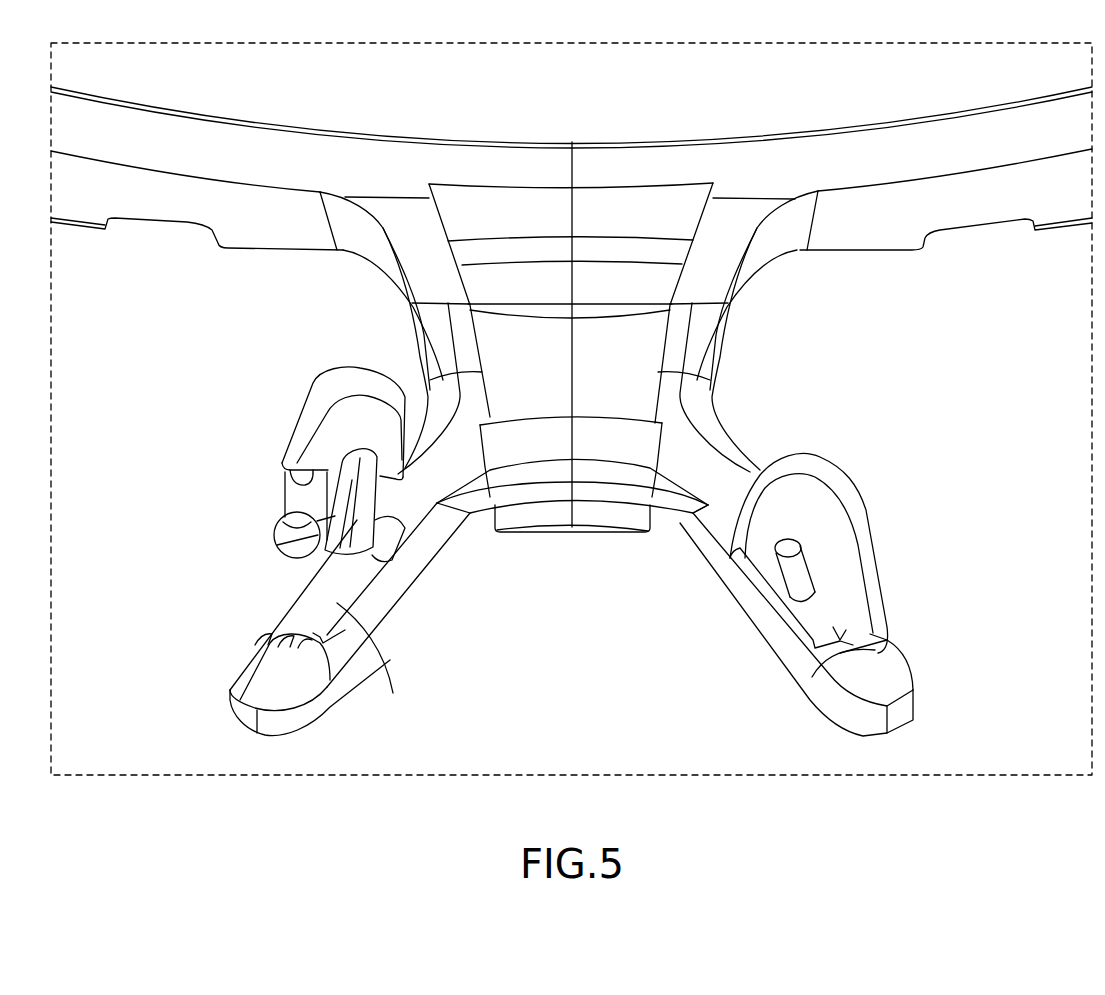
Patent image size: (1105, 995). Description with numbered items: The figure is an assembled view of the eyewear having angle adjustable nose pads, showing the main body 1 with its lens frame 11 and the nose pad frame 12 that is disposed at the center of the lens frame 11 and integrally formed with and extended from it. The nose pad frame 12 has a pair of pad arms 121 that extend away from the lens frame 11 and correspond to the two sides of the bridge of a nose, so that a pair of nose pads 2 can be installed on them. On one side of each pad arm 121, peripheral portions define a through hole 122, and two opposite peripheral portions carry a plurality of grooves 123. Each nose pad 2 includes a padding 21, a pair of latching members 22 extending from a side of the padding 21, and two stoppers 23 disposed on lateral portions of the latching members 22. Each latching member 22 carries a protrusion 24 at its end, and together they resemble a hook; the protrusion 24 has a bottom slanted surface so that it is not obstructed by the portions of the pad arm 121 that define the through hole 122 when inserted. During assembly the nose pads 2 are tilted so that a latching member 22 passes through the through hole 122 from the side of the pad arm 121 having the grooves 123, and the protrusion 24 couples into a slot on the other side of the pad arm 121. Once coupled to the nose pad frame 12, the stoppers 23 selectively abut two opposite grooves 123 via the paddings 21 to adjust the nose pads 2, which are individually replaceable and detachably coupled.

The main body 1 is at (571, 344).
The lens frame 11 is at (650, 158).
The nose pad frame 12 is at (289, 630).
The pad arm 121 is at (437, 470).
The through hole 122 is at (340, 610).
The grooves 123 is at (286, 634).
The nose pad 2 is at (331, 489).
The padding 21 is at (307, 417).
The latching member 22 is at (394, 529).
The stopper 23 is at (303, 479).
The protrusion 24 is at (287, 547).